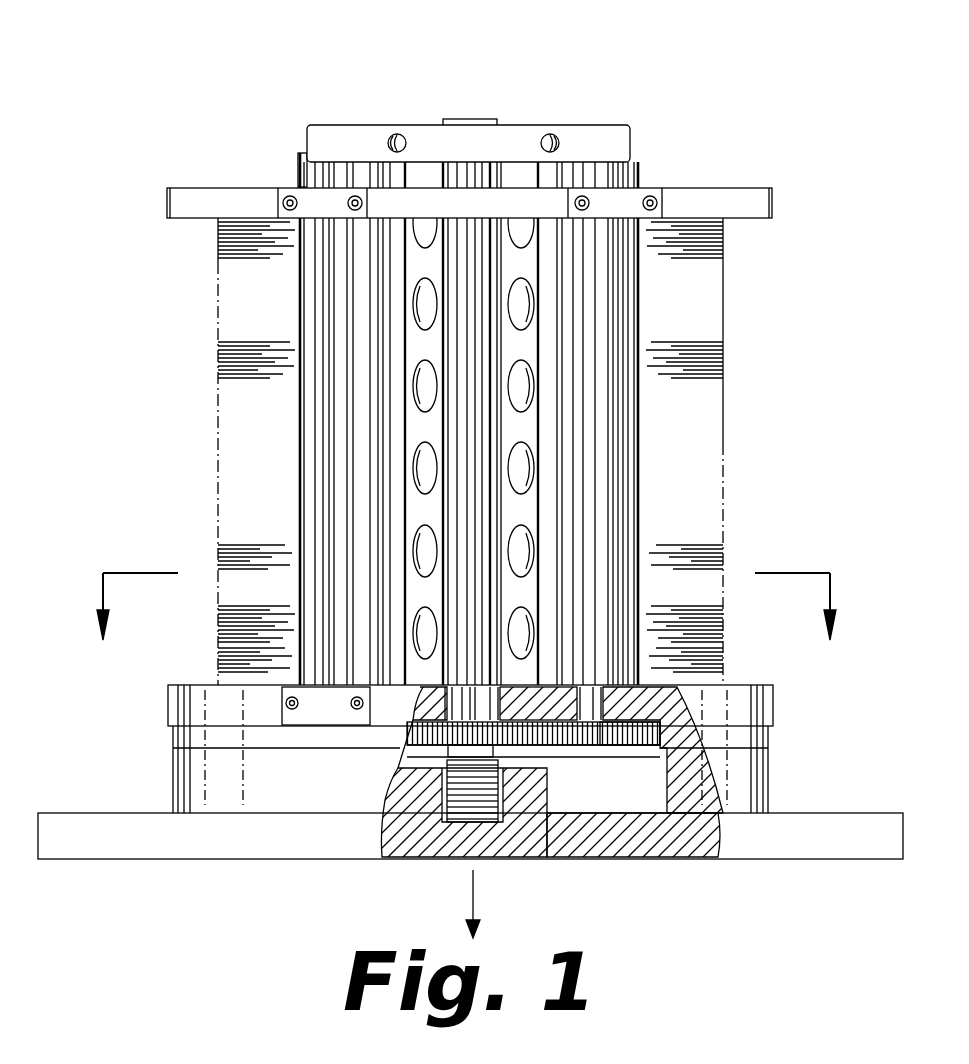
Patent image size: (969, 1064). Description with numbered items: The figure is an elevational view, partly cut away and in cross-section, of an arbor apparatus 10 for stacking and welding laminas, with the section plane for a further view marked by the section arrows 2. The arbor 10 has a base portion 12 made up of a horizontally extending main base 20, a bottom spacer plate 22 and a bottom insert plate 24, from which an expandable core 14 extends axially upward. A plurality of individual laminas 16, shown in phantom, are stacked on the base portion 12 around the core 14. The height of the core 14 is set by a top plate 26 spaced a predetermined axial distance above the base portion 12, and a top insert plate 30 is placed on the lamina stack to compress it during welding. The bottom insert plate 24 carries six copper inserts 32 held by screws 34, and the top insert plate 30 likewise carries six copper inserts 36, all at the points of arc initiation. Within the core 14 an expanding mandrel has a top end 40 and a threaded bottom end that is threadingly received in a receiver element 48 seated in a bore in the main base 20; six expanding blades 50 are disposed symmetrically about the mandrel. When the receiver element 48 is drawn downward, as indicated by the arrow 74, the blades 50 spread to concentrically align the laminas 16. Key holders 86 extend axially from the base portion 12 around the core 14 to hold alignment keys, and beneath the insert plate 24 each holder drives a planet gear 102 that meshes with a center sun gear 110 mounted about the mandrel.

The arbor apparatus 10 is at (194, 92).
The base portion 12 is at (440, 741).
The expandable core 14 is at (283, 442).
The laminas 16 is at (705, 297).
The main base 20 is at (846, 813).
The bottom spacer plate 22 is at (750, 770).
The bottom insert plate 24 is at (735, 702).
The top plate 26 is at (631, 148).
The top insert plate 30 is at (778, 210).
The copper inserts 32 is at (312, 725).
The screws 34 is at (285, 705).
The copper inserts 36 is at (282, 203).
The top end 40 is at (600, 550).
The receiver element 48 is at (537, 858).
The expanding blades 50 is at (548, 420).
The arrow 74 is at (468, 898).
The key holders 86 is at (296, 300).
The planet gear 102 is at (597, 745).
The center sun gear 110 is at (652, 745).
The section line 2- 2 is at (466, 618).